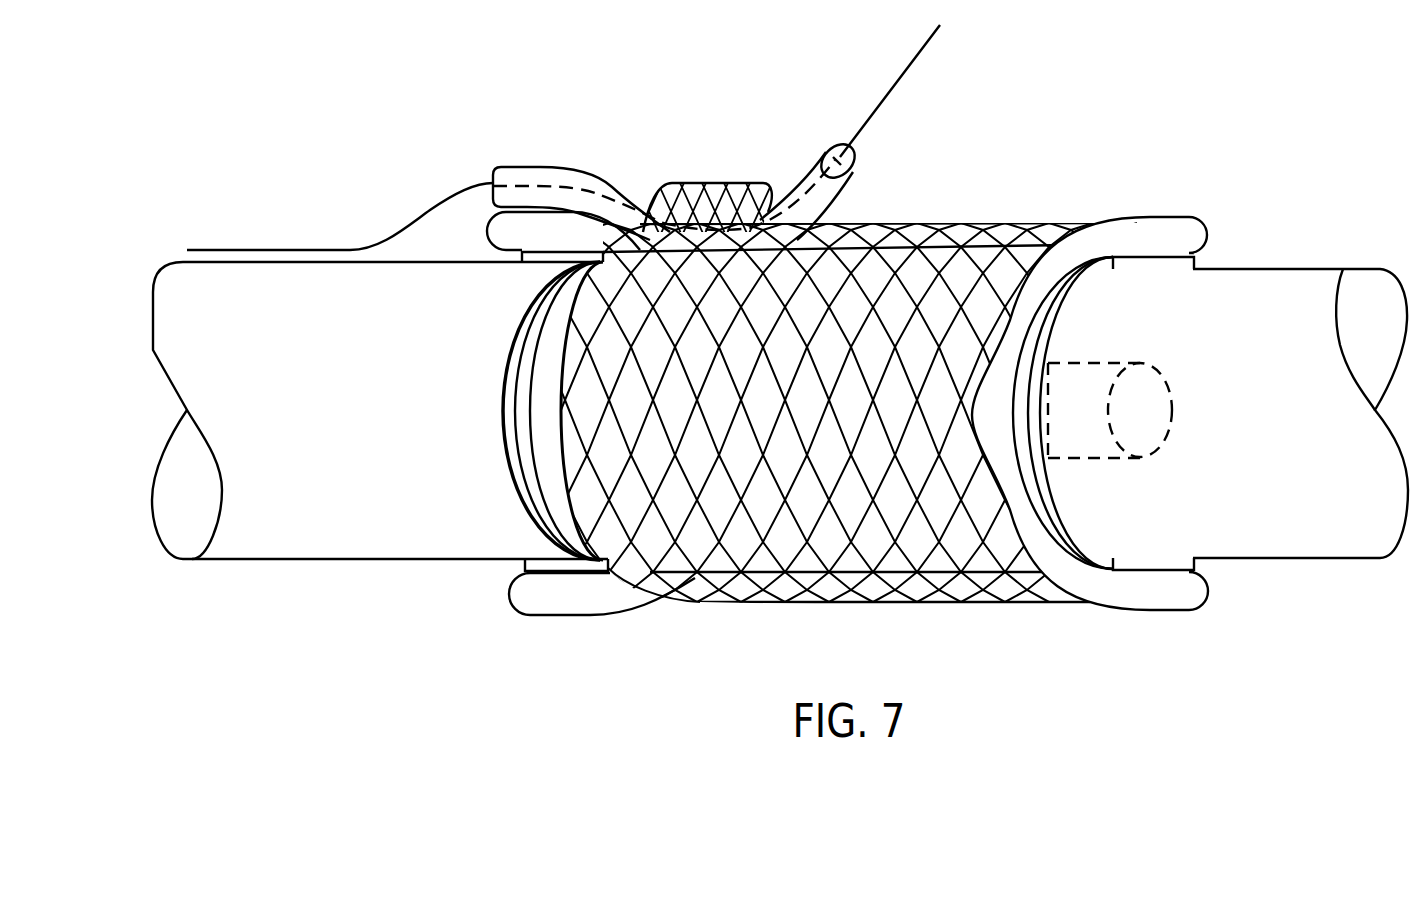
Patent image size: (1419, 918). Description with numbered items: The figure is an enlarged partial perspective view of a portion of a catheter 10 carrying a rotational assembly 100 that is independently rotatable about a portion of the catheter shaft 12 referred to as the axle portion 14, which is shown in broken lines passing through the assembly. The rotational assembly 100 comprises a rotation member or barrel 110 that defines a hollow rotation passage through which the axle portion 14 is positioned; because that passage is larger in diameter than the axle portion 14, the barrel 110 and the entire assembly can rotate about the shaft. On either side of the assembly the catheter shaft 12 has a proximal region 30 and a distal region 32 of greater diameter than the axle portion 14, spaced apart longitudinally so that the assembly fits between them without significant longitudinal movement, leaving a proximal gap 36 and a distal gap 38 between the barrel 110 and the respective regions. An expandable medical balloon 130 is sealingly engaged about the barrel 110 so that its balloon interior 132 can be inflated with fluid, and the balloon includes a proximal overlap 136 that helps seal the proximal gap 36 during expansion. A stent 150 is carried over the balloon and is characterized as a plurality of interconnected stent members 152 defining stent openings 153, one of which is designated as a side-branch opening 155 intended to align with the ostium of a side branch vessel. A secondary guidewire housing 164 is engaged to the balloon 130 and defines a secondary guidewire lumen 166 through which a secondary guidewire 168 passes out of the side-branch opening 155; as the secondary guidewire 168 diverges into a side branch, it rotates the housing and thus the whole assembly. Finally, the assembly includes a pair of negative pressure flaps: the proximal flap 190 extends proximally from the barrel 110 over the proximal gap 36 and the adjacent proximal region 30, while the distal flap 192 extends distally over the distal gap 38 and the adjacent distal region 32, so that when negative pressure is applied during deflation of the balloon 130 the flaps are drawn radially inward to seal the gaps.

The catheter 10 is at (290, 602).
The catheter shaft 12 is at (381, 561).
The axle portion 14 is at (1172, 416).
The proximal region 30 is at (237, 270).
The distal region 32 is at (1293, 269).
The proximal gap 36 is at (505, 377).
The distal gap 38 is at (1058, 493).
The rotational assembly 100 is at (1114, 130).
The barrel 110 is at (527, 440).
The expandable medical balloon 130 is at (945, 224).
The balloon interior 132 is at (990, 258).
The proximal overlap 136 is at (543, 617).
The stent 150 is at (808, 603).
The stent members 152 is at (895, 603).
The stent openings 153 is at (985, 603).
The side-branch opening 155 is at (822, 224).
The secondary guidewire housing 164 is at (799, 172).
The secondary guidewire lumen 166 is at (833, 149).
The secondary guidewire 168 is at (312, 250).
The proximal flap 190 is at (533, 260).
The distal flap 192 is at (1152, 270).